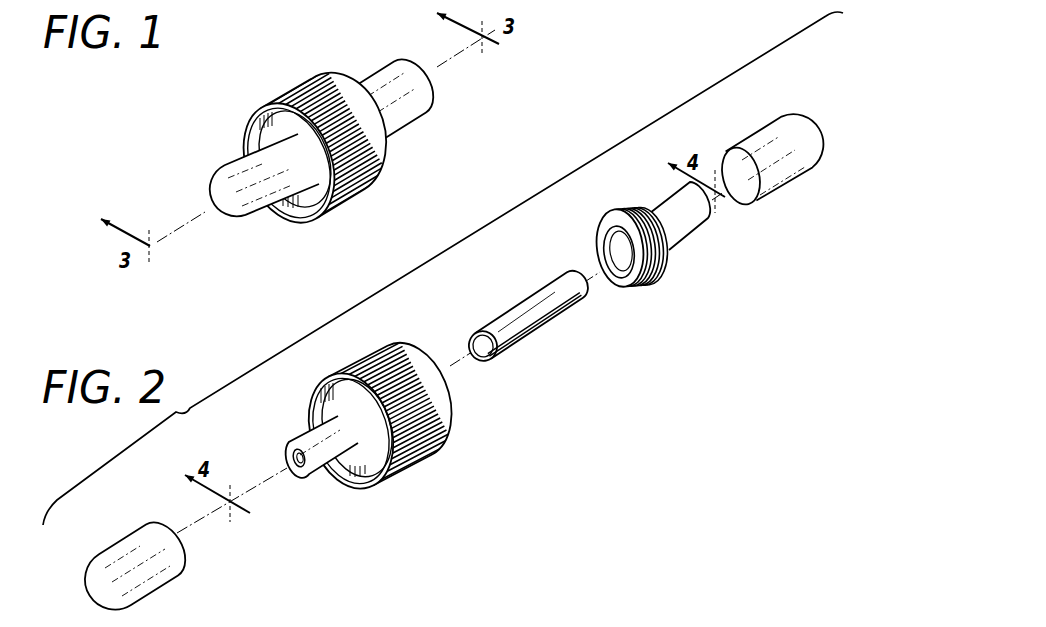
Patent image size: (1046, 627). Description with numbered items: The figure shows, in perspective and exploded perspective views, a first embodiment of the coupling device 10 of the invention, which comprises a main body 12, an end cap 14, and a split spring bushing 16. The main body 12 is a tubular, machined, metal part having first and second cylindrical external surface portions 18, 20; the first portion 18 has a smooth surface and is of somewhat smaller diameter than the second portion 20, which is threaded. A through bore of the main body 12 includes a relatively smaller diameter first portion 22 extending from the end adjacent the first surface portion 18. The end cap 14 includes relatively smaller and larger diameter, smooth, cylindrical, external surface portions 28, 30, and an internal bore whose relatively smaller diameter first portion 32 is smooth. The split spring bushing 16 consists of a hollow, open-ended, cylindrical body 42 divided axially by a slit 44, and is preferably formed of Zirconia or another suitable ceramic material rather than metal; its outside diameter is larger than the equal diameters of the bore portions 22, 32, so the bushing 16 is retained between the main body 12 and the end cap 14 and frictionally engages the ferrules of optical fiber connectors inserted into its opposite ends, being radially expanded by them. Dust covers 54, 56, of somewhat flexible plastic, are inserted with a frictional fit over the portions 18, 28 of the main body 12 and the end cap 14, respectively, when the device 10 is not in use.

In FIG. 1, the coupling device 10 is at (280, 238).
In FIG. 1, the main body 12 is at (398, 80).
In FIG. 2, the main body 12 is at (651, 264).
In FIG. 1, the end cap 14 is at (319, 134).
In FIG. 2, the end cap 14 is at (379, 458).
In FIG. 2, the split spring bushing 16 is at (556, 325).
In FIG. 2, the first cylindrical external surface portion 18 is at (693, 225).
In FIG. 2, the second cylindrical external surface portion 20 is at (598, 247).
In FIG. 2, the first bore portion 22 is at (620, 268).
In FIG. 2, the first external surface portion 28 is at (313, 437).
In FIG. 1, the second external surface portion 30 is at (350, 177).
In FIG. 2, the second external surface portion 30 is at (413, 452).
In FIG. 2, the first bore portion 32 is at (295, 470).
In FIG. 2, the cylindrical body 42 is at (515, 317).
In FIG. 2, the slit 44 is at (525, 340).
In FIG. 1, the dust cover 54 is at (243, 172).
In FIG. 2, the dust cover 54 is at (115, 560).
In FIG. 1, the dust cover 56 is at (395, 115).
In FIG. 2, the dust cover 56 is at (798, 125).